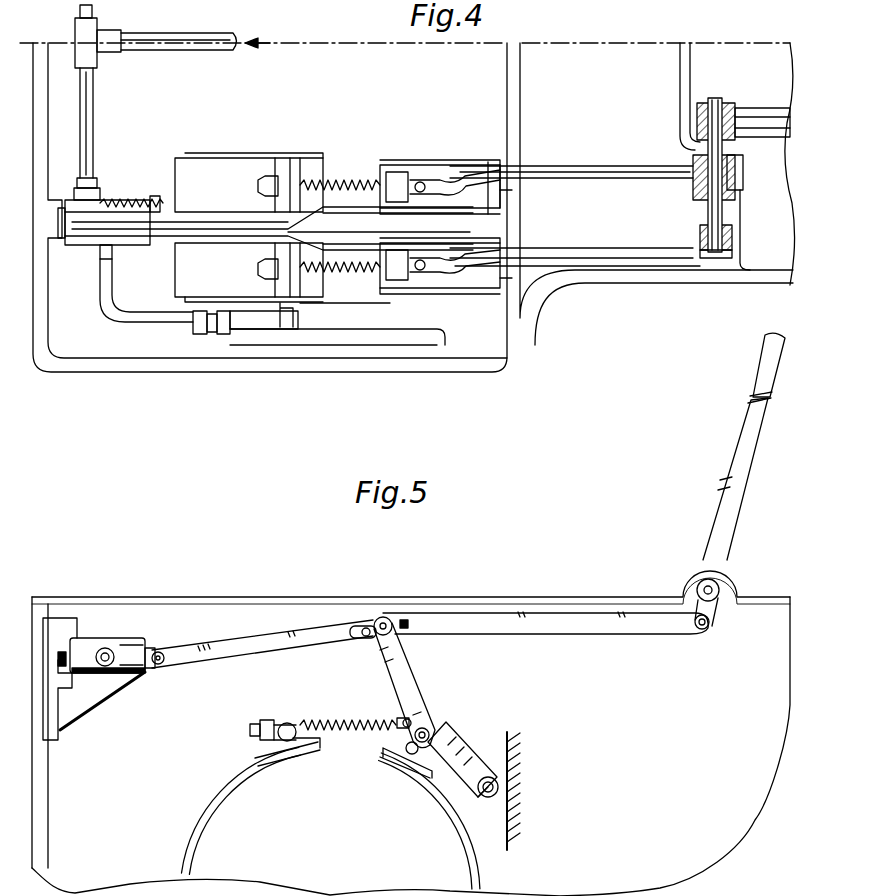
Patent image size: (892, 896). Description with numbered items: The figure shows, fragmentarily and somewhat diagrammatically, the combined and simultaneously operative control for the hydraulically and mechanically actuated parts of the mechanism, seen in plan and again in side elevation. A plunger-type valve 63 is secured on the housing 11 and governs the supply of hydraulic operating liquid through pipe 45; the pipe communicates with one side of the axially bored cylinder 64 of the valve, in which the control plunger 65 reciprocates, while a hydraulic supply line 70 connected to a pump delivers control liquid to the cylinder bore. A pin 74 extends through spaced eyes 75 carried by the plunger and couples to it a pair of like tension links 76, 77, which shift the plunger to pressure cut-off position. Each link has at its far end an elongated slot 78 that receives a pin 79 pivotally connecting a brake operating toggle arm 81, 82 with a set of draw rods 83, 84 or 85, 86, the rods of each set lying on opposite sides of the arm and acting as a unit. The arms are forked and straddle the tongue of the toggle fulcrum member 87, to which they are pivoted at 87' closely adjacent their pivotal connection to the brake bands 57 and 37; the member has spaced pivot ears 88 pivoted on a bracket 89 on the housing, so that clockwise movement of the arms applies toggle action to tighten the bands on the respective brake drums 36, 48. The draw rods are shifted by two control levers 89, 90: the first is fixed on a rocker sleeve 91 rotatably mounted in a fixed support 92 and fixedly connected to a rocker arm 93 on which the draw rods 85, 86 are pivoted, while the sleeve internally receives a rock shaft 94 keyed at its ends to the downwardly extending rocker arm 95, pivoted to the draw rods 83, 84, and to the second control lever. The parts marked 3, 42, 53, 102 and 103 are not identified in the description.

In FIG. 5, the section line 3- 3 is at (52, 640).
In FIG. 4, the housing 11 is at (95, 368).
In FIG. 5, the housing 11 is at (508, 806).
In FIG. 4, the brake drum 36 is at (333, 165).
In FIG. 4, the brake band 37 is at (233, 165).
In FIG. 4, the accumulator cylinder 42 is at (253, 325).
In FIG. 4, the pipe 45 is at (163, 330).
In FIG. 5, the pipe 45 is at (107, 680).
In FIG. 4, the brake drum 48 is at (410, 290).
In FIG. 4, the plate 53 is at (355, 293).
In FIG. 4, the brake band 57 is at (178, 280).
In FIG. 5, the brake band 57 is at (182, 840).
In FIG. 4, the plunger-type valve 63 is at (85, 240).
In FIG. 5, the plunger-type valve 63 is at (125, 638).
In FIG. 4, the cylinder 64 is at (133, 245).
In FIG. 5, the control plunger 65 is at (62, 650).
In FIG. 4, the hydraulic supply line 70 is at (87, 125).
In FIG. 5, the pin 74 is at (160, 666).
In FIG. 5, the spaced eyes 75 is at (160, 650).
In FIG. 4, the tension link 76 is at (288, 236).
In FIG. 5, the tension link 76 is at (228, 656).
In FIG. 4, the tension link 77 is at (290, 215).
In FIG. 5, the elongated slot 78 is at (365, 640).
In FIG. 5, the pin 79 is at (383, 617).
In FIG. 4, the brake operating toggle arm 81 is at (480, 165).
In FIG. 5, the brake operating toggle arm 81 is at (412, 672).
In FIG. 4, the brake operating toggle arm 82 is at (400, 175).
In FIG. 4, the draw rod 83 is at (625, 262).
In FIG. 5, the draw rod 83 is at (625, 620).
In FIG. 4, the draw rod 84 is at (573, 246).
In FIG. 4, the draw rod 85 is at (598, 170).
In FIG. 4, the draw rod 86 is at (585, 168).
In FIG. 4, the toggle fulcrum member 87 is at (455, 156).
In FIG. 5, the toggle fulcrum member 87 is at (463, 748).
In FIG. 5, the pivot 87' is at (431, 706).
In FIG. 4, the pivot ears 88 is at (505, 193).
In FIG. 5, the pivot ears 88 is at (486, 792).
In FIG. 4, the control lever 89 is at (770, 125).
In FIG. 5, the control lever 89 is at (742, 488).
In FIG. 4, the control lever 90 is at (762, 105).
In FIG. 4, the rocker sleeve 91 is at (722, 212).
In FIG. 4, the fixed support 92 is at (690, 148).
In FIG. 4, the rocker arm 93 is at (697, 196).
In FIG. 4, the rock shaft 94 is at (712, 135).
In FIG. 5, the rock shaft 94 is at (715, 590).
In FIG. 4, the rocker arm 95 is at (727, 242).
In FIG. 5, the rocker arm 95 is at (710, 620).
In FIG. 5, the rail 102 is at (155, 893).
In FIG. 5, the track 103 is at (236, 893).